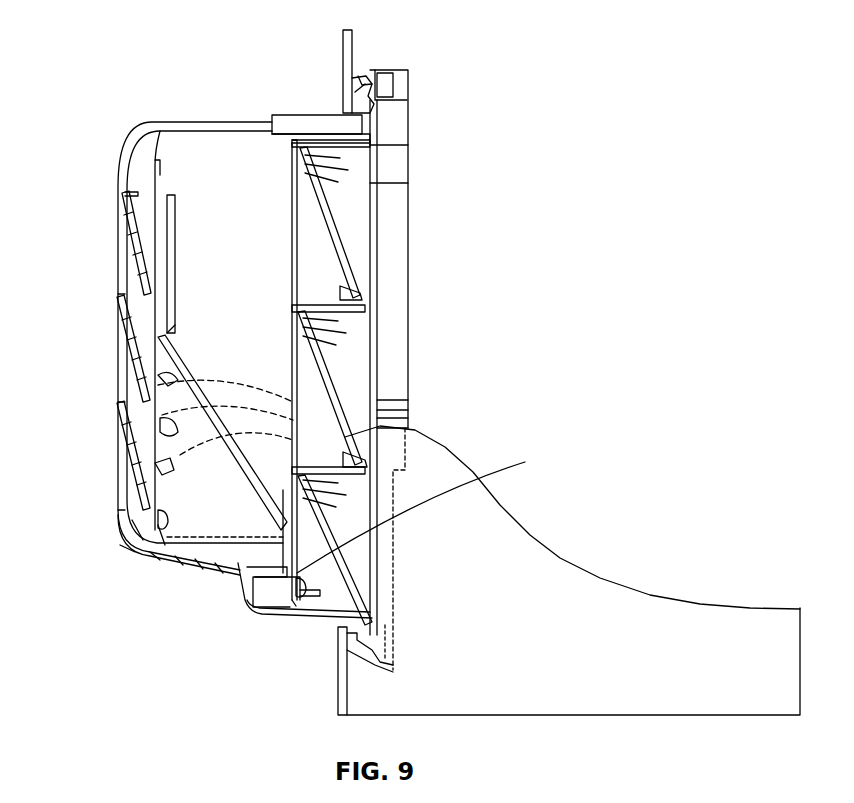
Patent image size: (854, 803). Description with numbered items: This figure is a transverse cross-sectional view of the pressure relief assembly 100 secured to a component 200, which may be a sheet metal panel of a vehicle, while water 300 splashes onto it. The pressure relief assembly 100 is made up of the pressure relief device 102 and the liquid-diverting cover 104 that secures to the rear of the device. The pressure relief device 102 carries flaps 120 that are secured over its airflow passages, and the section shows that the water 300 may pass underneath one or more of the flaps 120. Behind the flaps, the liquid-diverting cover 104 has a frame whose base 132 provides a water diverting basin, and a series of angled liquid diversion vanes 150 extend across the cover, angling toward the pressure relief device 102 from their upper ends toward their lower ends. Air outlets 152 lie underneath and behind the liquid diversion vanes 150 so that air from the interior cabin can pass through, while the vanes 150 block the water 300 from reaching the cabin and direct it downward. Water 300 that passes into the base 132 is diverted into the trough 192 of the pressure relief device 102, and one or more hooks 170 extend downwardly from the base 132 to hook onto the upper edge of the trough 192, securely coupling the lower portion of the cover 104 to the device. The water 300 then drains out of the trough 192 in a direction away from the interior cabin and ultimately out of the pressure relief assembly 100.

The pressure relief assembly 100 is at (258, 102).
The pressure relief device 102 is at (408, 123).
The liquid-diverting cover 104 is at (112, 185).
The flap 120 is at (338, 243).
The base 132 is at (148, 553).
The liquid diversion vane 150 is at (135, 255).
The air outlet 152 is at (128, 292).
The hook 170 is at (240, 583).
The trough 192 is at (247, 605).
The component 200 is at (352, 45).
The water 300 is at (212, 380).